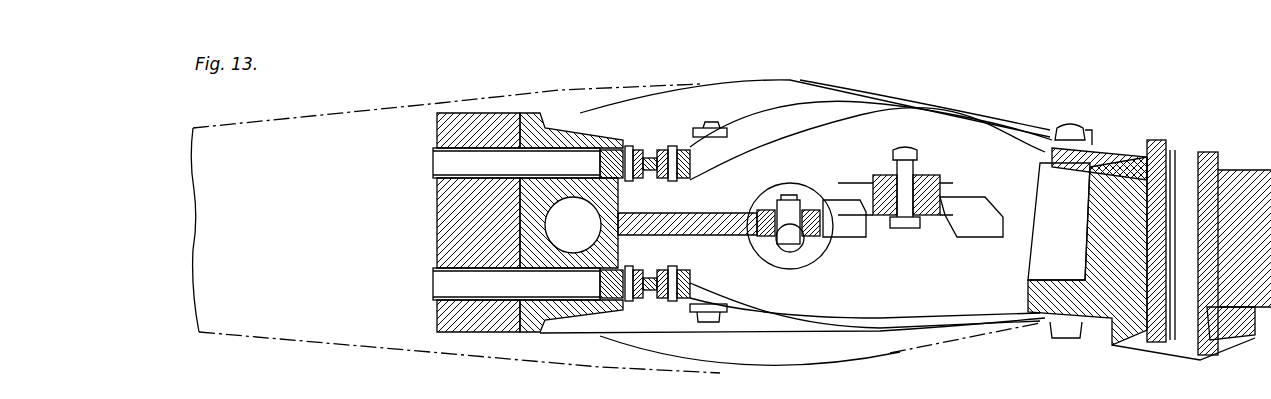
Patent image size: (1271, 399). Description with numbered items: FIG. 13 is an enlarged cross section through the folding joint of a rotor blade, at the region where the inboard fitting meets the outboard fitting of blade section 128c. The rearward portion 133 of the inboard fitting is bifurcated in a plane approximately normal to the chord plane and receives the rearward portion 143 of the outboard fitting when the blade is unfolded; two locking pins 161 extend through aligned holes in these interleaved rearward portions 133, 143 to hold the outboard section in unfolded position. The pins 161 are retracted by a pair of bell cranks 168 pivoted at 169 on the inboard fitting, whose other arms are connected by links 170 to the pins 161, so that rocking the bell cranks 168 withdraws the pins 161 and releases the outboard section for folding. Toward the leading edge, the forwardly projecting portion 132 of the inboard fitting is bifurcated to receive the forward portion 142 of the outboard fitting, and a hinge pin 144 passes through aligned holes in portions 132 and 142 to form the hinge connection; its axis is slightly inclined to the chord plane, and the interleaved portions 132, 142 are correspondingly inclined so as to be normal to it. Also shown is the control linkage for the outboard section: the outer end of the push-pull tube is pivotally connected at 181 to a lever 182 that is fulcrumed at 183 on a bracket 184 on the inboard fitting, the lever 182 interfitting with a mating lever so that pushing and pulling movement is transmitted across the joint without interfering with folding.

The blade root outline 128c is at (450, 98).
The forwardly projecting portion of the inboard fitting 132 is at (1117, 160).
The rearward portion of the inboard fitting 133 is at (437, 235).
The forwardly projecting portion of the outboard fitting 142 is at (1090, 236).
The rearwardly projecting portion of the outboard fitting 143 is at (487, 333).
The hinge pin 144 is at (1200, 153).
The pins 161 is at (437, 162).
The bell cranks 168 is at (793, 133).
The bell crank pivot 169 is at (707, 130).
The links 170 is at (667, 180).
The pivotal connection 181 is at (791, 190).
The lever 182 is at (992, 192).
The fulcrum 183 is at (905, 229).
The bracket 184 is at (920, 178).